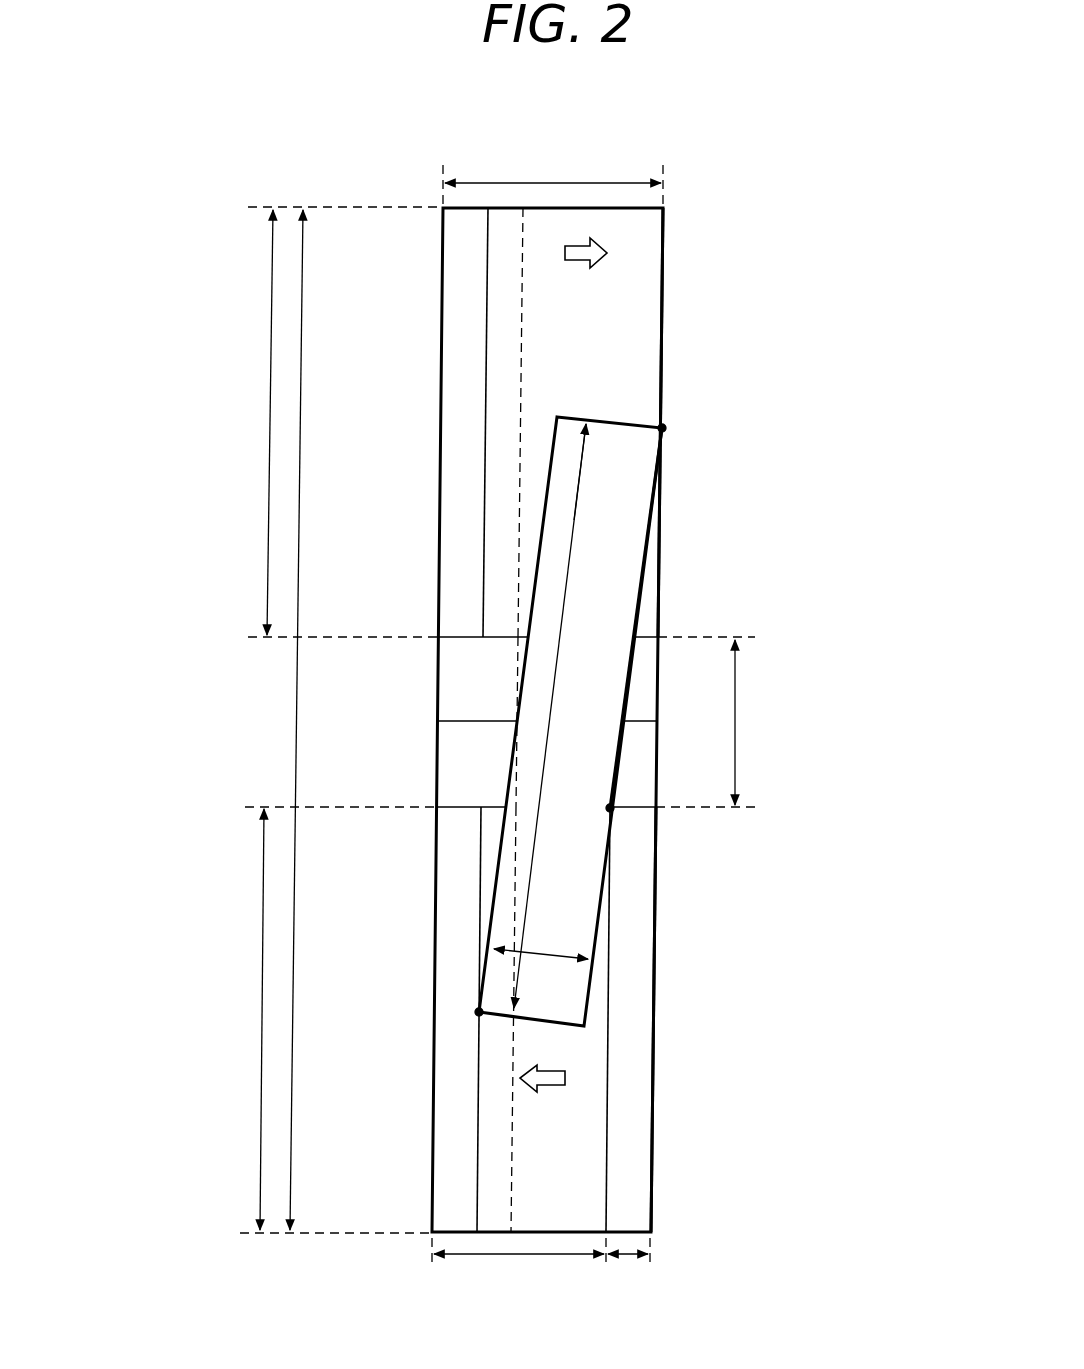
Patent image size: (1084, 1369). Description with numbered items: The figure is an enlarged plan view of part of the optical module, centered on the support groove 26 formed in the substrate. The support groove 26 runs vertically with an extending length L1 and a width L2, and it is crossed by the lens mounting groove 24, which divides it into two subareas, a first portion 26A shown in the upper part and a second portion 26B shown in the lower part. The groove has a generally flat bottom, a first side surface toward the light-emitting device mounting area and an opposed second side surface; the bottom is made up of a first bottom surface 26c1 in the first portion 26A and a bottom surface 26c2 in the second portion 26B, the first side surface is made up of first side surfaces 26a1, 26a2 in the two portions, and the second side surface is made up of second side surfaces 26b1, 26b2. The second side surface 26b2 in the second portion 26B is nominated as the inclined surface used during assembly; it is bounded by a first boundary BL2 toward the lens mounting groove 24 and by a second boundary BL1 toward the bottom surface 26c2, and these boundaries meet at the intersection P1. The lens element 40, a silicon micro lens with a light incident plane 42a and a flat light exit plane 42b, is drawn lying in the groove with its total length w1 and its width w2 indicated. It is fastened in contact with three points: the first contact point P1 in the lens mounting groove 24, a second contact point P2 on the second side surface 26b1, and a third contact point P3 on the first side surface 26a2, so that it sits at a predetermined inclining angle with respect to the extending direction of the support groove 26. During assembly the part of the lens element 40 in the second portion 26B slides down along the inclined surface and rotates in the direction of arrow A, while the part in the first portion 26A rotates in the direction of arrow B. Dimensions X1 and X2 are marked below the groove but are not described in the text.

The support groove 26 is at (663, 240).
The first side surface in the first portion 26a1 is at (460, 238).
The first side surface in the second portion 26a2 is at (458, 1150).
The second side surface in the first portion 26b1 is at (663, 296).
The second side surface in the second portion 26b2 is at (627, 1105).
The first bottom surface 26c1 is at (600, 337).
The second bottom surface 26c2 is at (568, 1152).
The first portion 26A is at (270, 420).
The second portion 26B is at (262, 1034).
The lens mounting groove 24 is at (735, 722).
The lens element 40 is at (612, 595).
The light incident plane 42a is at (520, 690).
The light exit plane 42b is at (617, 770).
The second boundary BL1 is at (610, 997).
The first boundary BL2 is at (634, 810).
The first contact point P1 is at (610, 808).
The second contact point P2 is at (662, 428).
The third contact point P3 is at (480, 1014).
The total length of the lens element w1 is at (560, 592).
The width of the lens element w2 is at (545, 950).
The extending length L1 is at (298, 722).
The width of the support groove L2 is at (553, 183).
The first width dimension X1 is at (632, 1257).
The second width dimension X2 is at (527, 1257).
The arrow A is at (542, 1095).
The arrow B is at (586, 265).